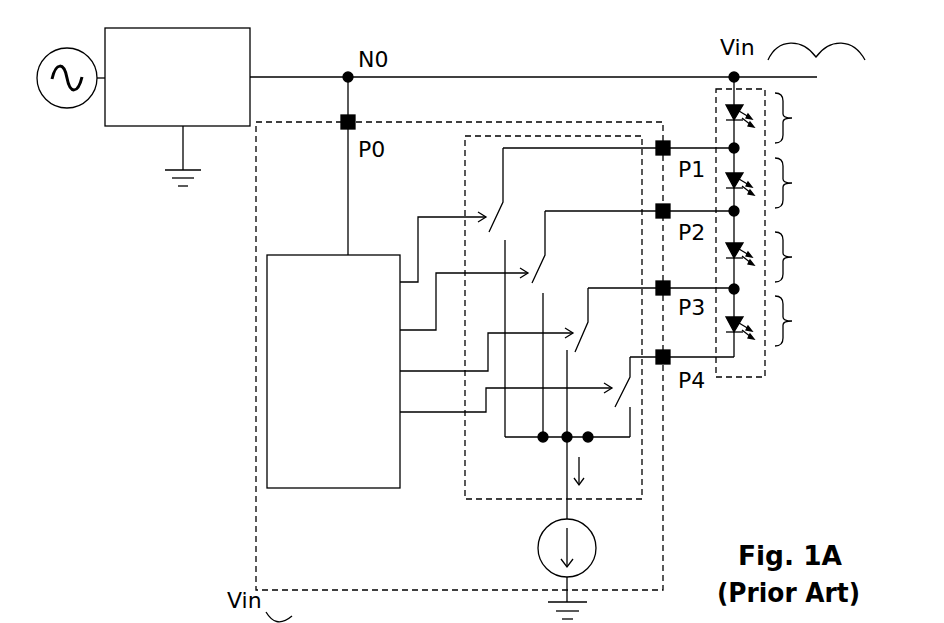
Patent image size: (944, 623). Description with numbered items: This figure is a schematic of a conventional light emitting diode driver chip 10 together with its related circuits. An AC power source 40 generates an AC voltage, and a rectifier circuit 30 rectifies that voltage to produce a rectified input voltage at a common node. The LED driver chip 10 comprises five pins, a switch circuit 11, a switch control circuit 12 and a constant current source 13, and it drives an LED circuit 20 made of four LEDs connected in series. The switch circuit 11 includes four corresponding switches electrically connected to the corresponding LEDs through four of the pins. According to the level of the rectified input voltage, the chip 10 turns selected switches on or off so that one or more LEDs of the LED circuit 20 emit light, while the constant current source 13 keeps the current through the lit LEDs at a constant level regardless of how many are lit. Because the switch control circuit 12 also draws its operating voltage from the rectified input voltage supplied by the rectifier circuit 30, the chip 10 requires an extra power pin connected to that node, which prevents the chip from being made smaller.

The LED driver chip 10 is at (334, 580).
The switch circuit 11 is at (501, 494).
The switch control circuit 12 is at (340, 479).
The constant current source 13 is at (540, 554).
The LED circuit 20 is at (716, 137).
The rectifier circuit 30 is at (141, 120).
The AC power source 40 is at (64, 50).